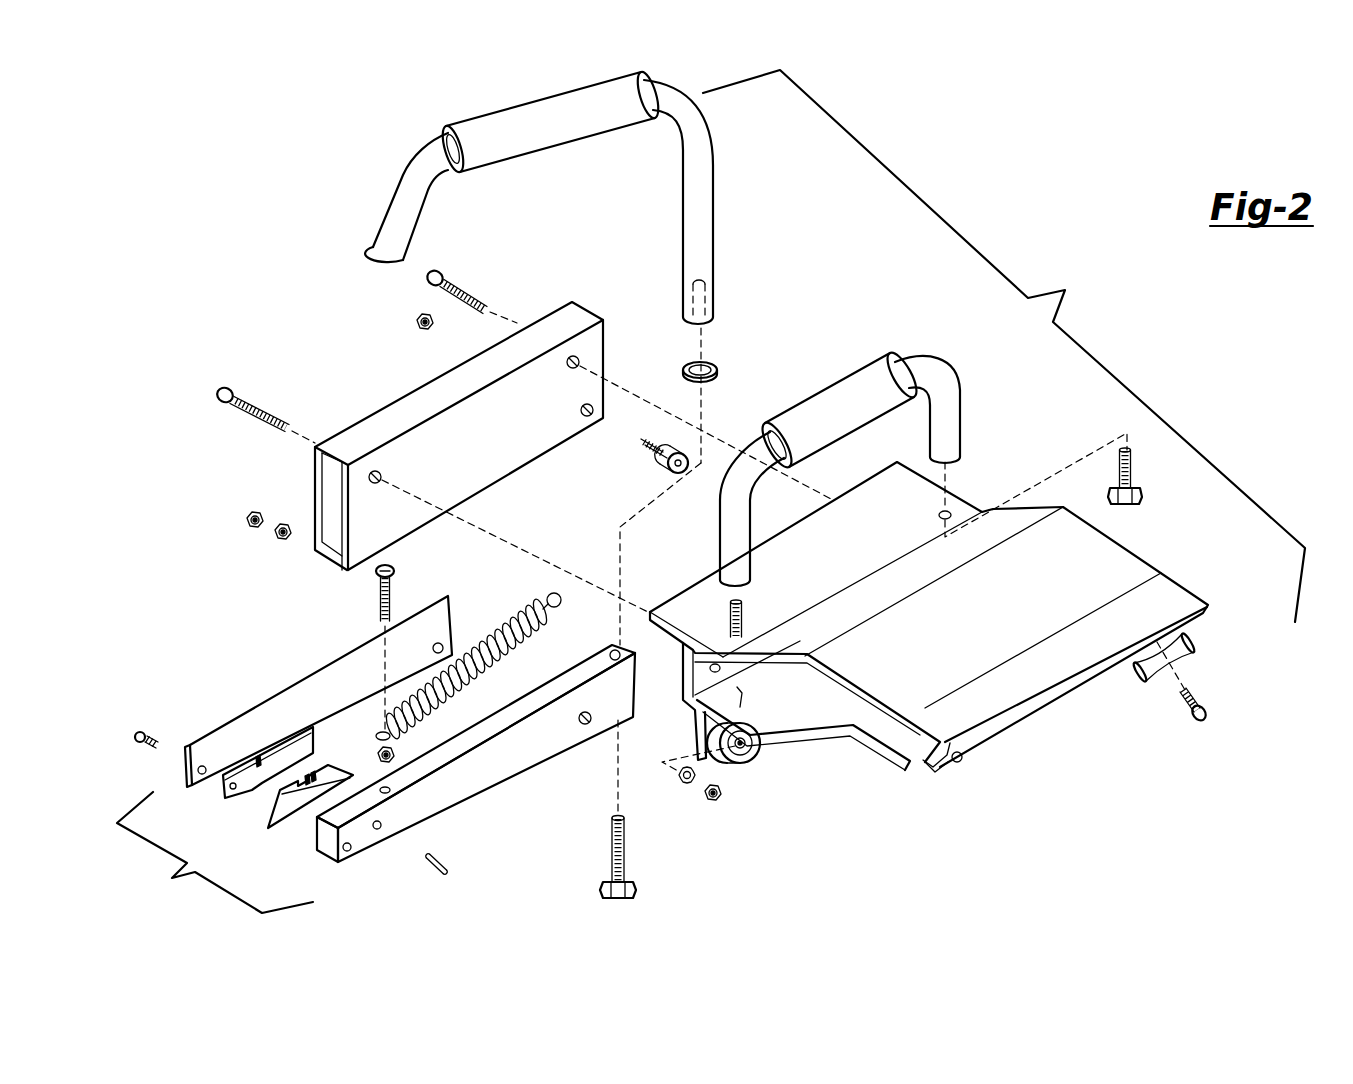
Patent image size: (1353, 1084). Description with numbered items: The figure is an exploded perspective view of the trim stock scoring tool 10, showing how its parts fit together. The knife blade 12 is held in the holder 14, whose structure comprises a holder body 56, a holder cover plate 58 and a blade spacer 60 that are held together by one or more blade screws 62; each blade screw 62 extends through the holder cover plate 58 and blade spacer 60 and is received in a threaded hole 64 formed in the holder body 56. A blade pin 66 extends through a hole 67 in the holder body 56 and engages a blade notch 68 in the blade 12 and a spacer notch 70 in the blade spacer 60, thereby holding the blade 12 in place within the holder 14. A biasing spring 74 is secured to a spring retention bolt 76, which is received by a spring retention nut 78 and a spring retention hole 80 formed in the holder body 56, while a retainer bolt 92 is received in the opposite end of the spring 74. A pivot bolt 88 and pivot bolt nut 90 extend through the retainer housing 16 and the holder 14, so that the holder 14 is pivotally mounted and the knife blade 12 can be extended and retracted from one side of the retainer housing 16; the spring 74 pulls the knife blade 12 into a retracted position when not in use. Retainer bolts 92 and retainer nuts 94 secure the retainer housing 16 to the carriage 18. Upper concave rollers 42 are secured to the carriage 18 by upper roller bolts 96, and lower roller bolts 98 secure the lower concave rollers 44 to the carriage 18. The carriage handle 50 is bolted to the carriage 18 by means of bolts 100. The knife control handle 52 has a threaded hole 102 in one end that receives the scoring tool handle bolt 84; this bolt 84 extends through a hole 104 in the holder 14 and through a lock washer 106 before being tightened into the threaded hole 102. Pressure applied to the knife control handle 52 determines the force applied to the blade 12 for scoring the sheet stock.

The scoring tool 10 is at (1004, 346).
The knife blade 12 is at (272, 808).
The holder 14 is at (215, 852).
The retainer housing 16 is at (386, 400).
The carriage 18 is at (1133, 562).
The upper concave rollers 42 is at (929, 770).
The lower concave rollers 44 is at (740, 760).
The carriage handle 50 is at (838, 398).
The knife control handle 52 is at (562, 100).
The holder body 56 is at (512, 778).
The holder cover plate 58 is at (341, 668).
The blade spacer 60 is at (226, 793).
The blade screws 62 is at (137, 742).
The threaded hole 64 is at (349, 851).
The blade pin 66 is at (447, 870).
The hole 67 is at (382, 825).
The blade notch 68 is at (312, 770).
The spacer notch 70 is at (258, 755).
The biasing spring 74 is at (522, 648).
The spring retention bolt 76 is at (393, 580).
The spring retention nut 78 is at (396, 750).
The spring retention hole 80 is at (392, 789).
The scoring tool handle bolt 84 is at (626, 870).
The pivot bolt 88 is at (645, 470).
The pivot bolt nut 90 is at (412, 318).
The retainer bolts 92 is at (457, 290).
The retainer nuts 94 is at (712, 802).
The upper roller bolts 96 is at (1206, 706).
The lower roller bolts 98 is at (745, 745).
The bolts 100 is at (1115, 481).
The threaded hole 102 is at (705, 302).
The hole 104 is at (617, 650).
The lock washer 106 is at (716, 366).